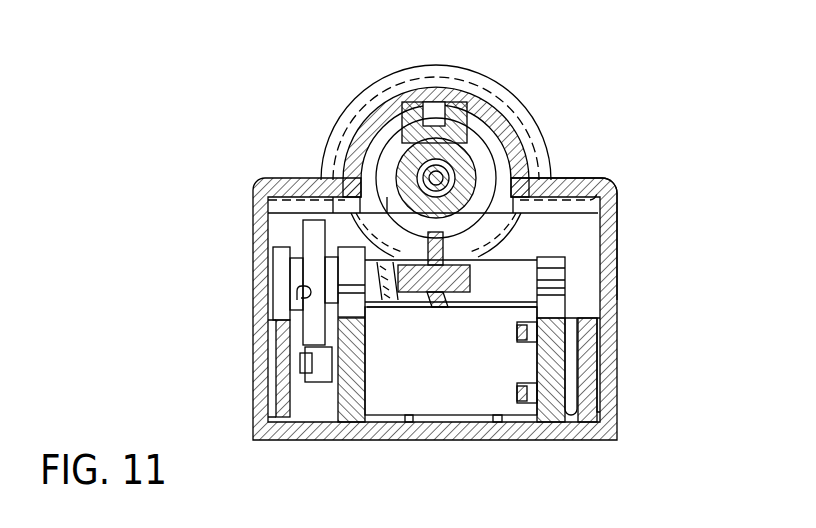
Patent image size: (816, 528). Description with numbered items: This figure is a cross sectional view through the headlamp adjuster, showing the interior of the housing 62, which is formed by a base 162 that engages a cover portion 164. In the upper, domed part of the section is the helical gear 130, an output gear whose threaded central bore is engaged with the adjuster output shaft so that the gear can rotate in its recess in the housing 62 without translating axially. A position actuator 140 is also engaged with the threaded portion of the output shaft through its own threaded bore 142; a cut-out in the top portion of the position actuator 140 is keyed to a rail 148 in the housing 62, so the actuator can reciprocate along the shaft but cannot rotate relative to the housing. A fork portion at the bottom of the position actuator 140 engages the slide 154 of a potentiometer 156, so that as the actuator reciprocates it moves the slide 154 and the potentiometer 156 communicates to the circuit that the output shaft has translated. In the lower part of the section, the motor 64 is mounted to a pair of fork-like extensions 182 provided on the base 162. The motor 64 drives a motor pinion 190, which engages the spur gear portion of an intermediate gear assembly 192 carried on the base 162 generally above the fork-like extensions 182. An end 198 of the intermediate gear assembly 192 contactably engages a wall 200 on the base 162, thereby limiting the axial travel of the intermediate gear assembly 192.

The housing 62 is at (626, 288).
The motor 64 is at (492, 395).
The helical gear 130 is at (547, 178).
The position actuator 140 is at (432, 150).
The threaded bore 142 is at (458, 132).
The rail 148 is at (437, 118).
The potentiometer slide 154 is at (403, 292).
The potentiometer 156 is at (478, 172).
The base 162 is at (586, 447).
The cover portion 164 is at (603, 172).
The fork-like extensions 182 is at (353, 391).
The motor pinion 190 is at (312, 378).
The intermediate gear assembly 192 is at (302, 233).
The end 198 is at (300, 272).
The wall 200 is at (296, 303).